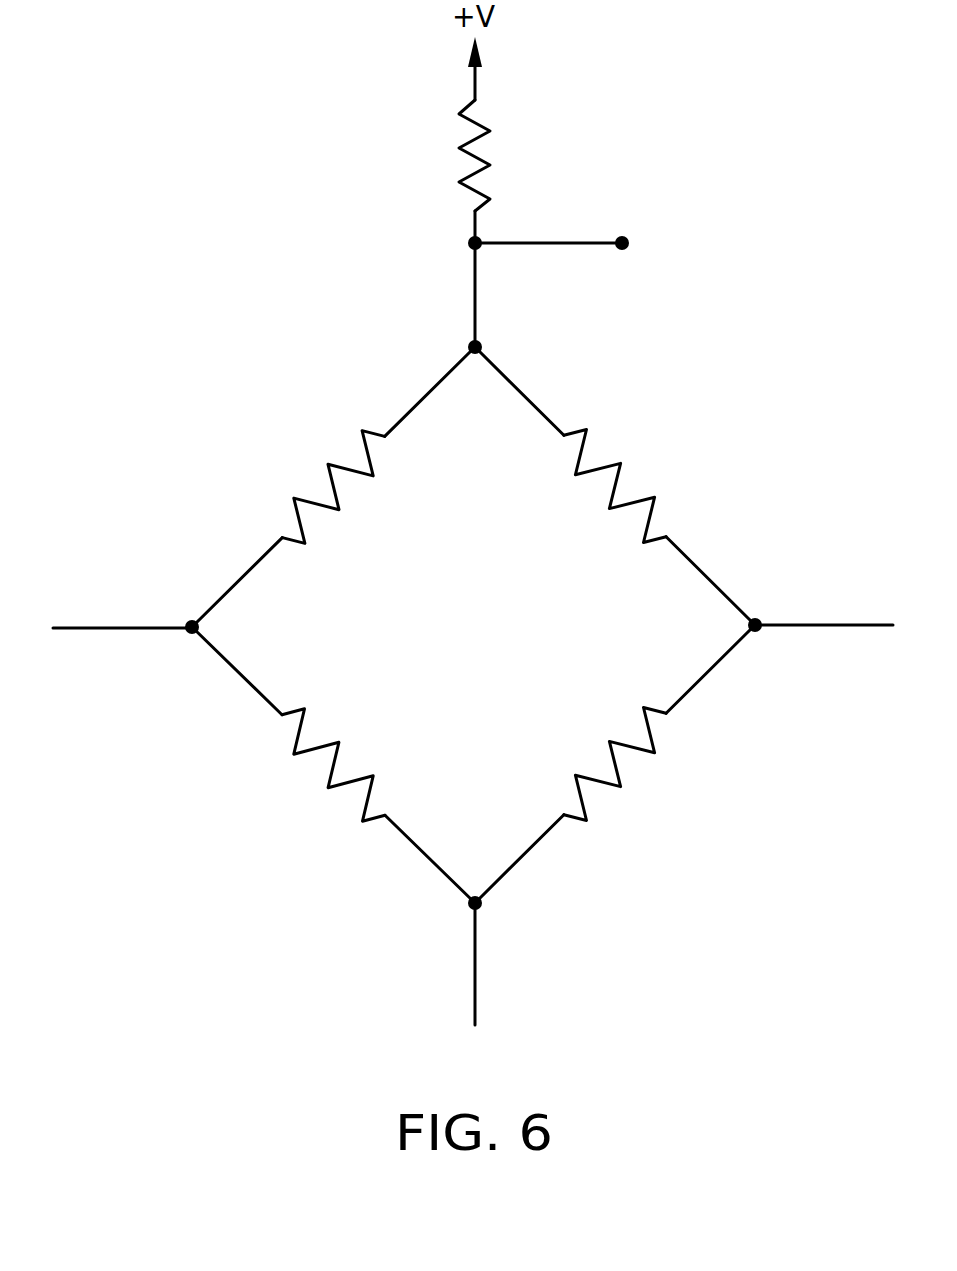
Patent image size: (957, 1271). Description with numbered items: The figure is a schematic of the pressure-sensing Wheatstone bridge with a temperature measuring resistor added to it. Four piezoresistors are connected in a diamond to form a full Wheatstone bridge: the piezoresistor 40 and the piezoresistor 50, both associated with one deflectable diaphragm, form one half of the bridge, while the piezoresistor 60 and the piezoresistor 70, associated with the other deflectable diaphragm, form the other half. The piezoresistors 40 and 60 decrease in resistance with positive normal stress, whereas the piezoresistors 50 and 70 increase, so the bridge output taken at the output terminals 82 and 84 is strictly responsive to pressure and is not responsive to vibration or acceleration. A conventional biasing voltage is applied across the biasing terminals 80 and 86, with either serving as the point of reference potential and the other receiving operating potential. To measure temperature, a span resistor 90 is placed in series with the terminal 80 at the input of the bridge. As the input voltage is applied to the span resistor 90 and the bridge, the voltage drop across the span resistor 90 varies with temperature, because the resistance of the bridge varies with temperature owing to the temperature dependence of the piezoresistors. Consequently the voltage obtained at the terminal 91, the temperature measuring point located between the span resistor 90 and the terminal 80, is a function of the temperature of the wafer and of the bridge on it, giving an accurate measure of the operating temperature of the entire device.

The span resistor 90 is at (487, 128).
The terminal 91 is at (567, 243).
The biasing terminal 80 is at (475, 347).
The piezoresistor 40 is at (327, 483).
The piezoresistor 60 is at (633, 497).
The piezoresistor 50 is at (372, 818).
The piezoresistor 70 is at (652, 733).
The output terminal 82 is at (192, 628).
The output terminal 84 is at (755, 625).
The biasing terminal 86 is at (480, 905).